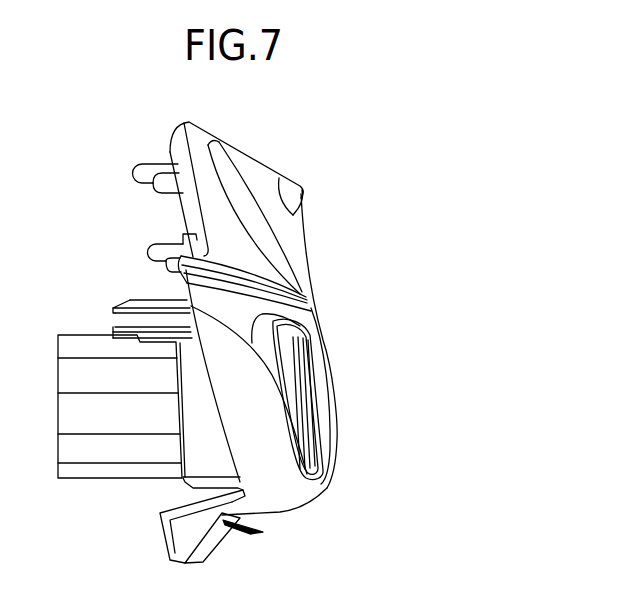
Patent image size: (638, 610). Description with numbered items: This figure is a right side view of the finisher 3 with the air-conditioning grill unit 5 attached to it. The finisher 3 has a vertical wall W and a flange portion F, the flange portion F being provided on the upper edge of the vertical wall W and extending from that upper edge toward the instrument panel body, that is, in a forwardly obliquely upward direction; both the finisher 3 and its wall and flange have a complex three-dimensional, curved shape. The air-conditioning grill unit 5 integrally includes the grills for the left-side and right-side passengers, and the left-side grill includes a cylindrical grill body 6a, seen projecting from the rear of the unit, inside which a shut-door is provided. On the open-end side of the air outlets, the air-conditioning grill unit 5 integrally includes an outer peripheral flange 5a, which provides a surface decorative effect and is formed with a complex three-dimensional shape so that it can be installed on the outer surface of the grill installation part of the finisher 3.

The finisher 3 is at (330, 278).
The flange portion F is at (262, 290).
The vertical wall W is at (308, 299).
The air-conditioning grill unit 5 is at (339, 401).
The outer peripheral flange 5a is at (318, 500).
The grill body 6a is at (93, 478).